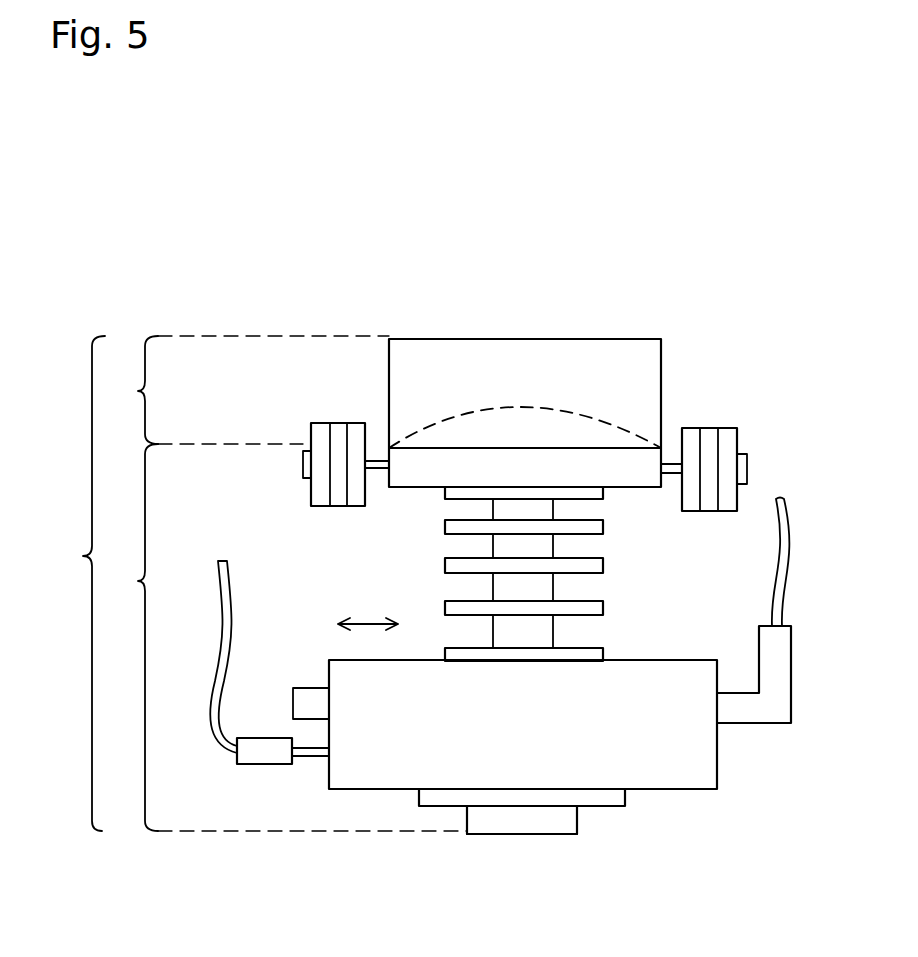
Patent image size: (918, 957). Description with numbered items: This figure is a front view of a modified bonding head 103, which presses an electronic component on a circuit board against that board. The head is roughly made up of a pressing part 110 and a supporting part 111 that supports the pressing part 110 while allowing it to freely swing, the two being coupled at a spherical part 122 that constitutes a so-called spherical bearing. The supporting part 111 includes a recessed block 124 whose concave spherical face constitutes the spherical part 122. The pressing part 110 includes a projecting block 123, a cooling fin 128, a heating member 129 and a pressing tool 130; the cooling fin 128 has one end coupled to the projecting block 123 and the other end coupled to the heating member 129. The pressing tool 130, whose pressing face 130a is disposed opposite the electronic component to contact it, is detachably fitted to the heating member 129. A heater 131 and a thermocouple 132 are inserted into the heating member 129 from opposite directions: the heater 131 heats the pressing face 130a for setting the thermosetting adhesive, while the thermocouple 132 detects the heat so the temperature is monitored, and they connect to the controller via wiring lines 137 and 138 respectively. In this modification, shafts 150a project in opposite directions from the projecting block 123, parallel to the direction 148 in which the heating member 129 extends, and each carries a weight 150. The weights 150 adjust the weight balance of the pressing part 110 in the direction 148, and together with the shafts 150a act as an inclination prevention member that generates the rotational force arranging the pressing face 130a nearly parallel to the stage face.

The bonding head 103 is at (66, 583).
The pressing part 110 is at (281, 637).
The supporting part 111 is at (243, 390).
The spherical part 122 is at (580, 392).
The projecting block 123 is at (422, 460).
The recessed block 124 is at (423, 355).
The cooling fin 128 is at (603, 528).
The heating member 129 is at (360, 765).
The pressing tool 130 is at (565, 821).
The pressing face 130a is at (552, 835).
The heater 131 is at (775, 693).
The thermocouple 132 is at (312, 753).
The wiring line 137 is at (787, 545).
The wiring line 138 is at (215, 578).
The direction 148 is at (368, 622).
The weight 150 is at (368, 420).
The shaft 150a is at (302, 463).